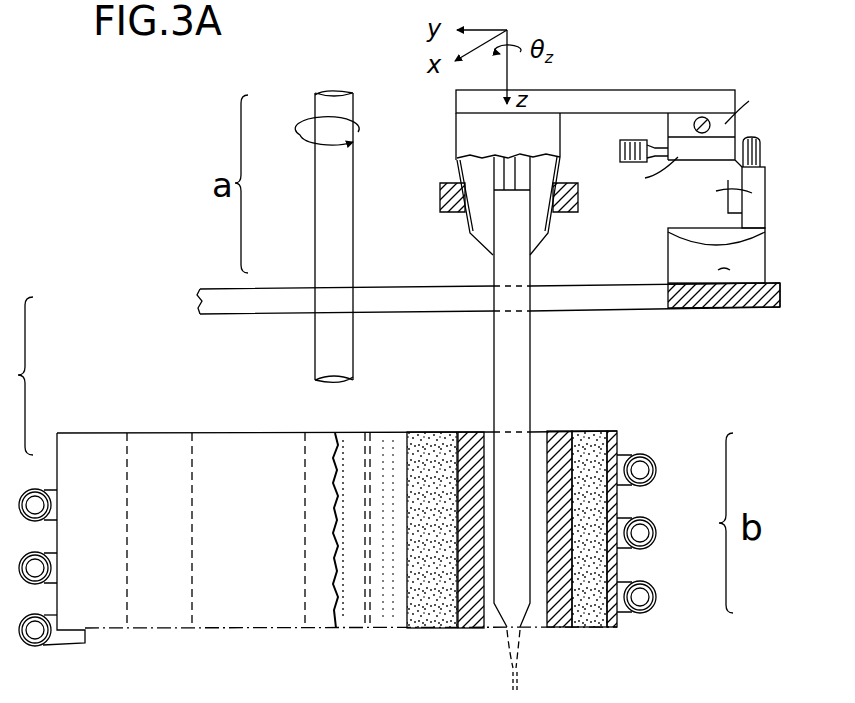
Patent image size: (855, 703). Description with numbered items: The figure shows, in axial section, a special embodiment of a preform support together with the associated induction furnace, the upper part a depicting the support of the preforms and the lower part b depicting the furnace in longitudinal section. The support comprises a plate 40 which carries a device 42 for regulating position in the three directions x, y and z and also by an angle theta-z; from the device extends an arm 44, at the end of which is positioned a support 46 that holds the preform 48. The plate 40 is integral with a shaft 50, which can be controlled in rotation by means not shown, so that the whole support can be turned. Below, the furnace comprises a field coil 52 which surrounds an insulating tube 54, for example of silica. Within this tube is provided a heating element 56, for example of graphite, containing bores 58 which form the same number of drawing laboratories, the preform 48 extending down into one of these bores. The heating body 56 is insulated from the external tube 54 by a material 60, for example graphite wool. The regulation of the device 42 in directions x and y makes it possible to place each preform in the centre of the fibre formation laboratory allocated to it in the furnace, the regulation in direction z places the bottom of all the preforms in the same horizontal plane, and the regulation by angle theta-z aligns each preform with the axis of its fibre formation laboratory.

The plate 40 is at (631, 300).
The device for regulating 42 is at (672, 207).
The arm 44 is at (638, 99).
The support 46 is at (477, 220).
The preform 48 is at (494, 341).
The shaft 50 is at (316, 229).
The field coil 52 is at (657, 468).
The insulating tube 54 is at (617, 432).
The heating element 56 is at (562, 613).
The bores 58 is at (492, 613).
The material 60 is at (437, 620).